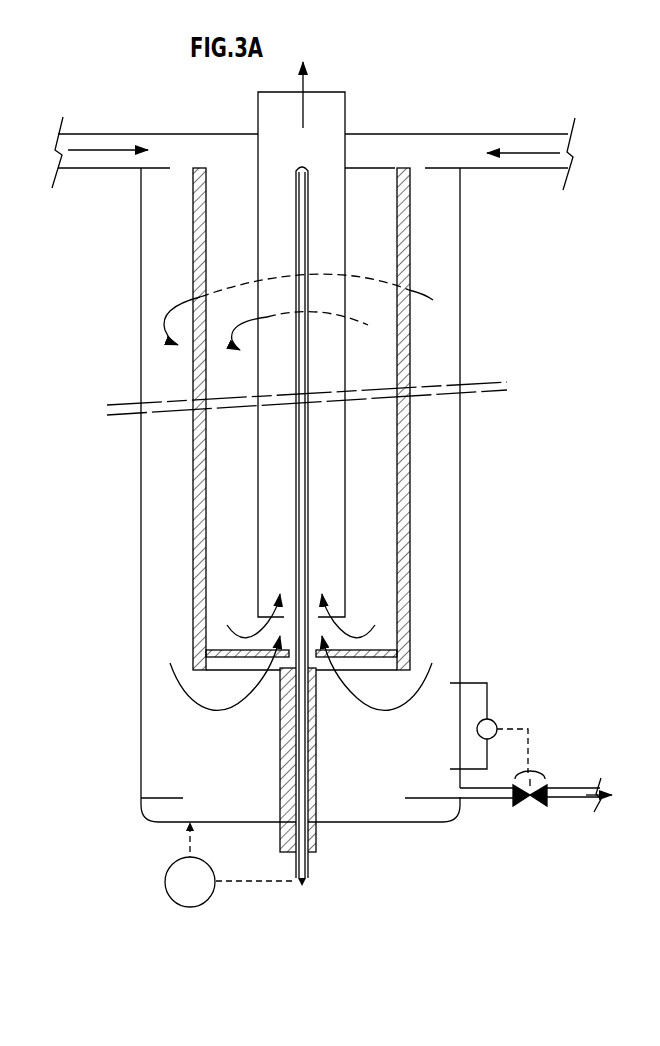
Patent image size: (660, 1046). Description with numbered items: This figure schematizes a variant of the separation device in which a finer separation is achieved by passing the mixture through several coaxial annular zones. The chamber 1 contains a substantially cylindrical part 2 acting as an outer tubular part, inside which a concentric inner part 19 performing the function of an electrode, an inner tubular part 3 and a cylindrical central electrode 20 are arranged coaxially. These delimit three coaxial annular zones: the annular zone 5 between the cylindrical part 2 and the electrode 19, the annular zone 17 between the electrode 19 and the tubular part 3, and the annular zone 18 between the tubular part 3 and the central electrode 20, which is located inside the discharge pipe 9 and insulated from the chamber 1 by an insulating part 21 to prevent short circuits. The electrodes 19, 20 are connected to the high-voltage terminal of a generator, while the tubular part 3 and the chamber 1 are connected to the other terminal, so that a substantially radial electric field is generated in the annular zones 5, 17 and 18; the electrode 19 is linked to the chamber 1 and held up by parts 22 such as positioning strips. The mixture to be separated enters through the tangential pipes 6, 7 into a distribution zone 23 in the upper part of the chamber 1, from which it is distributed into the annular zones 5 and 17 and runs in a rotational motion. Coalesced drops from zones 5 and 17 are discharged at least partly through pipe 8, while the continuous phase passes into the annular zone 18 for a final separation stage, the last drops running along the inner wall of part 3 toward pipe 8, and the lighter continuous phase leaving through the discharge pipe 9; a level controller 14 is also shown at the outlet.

The chamber 1 is at (556, 307).
The cylindrical part 2 is at (462, 273).
The inner tubular part 3 is at (345, 425).
The annular zone 5 is at (440, 216).
The pipe for introducing the mixture 6 is at (512, 143).
The pipe for introducing the mixture 7 is at (83, 142).
The discharge pipe 8 is at (573, 792).
The discharge pipe 9 is at (322, 127).
The level controller 14 is at (508, 704).
The annular zone 17 is at (378, 477).
The annular zone 18 is at (323, 522).
The concentric inner part 19 is at (402, 327).
The cylindrical central electrode 20 is at (305, 560).
The insulating part 21 is at (317, 846).
The positioning strips 22 is at (383, 658).
The distribution zone 23 is at (382, 143).